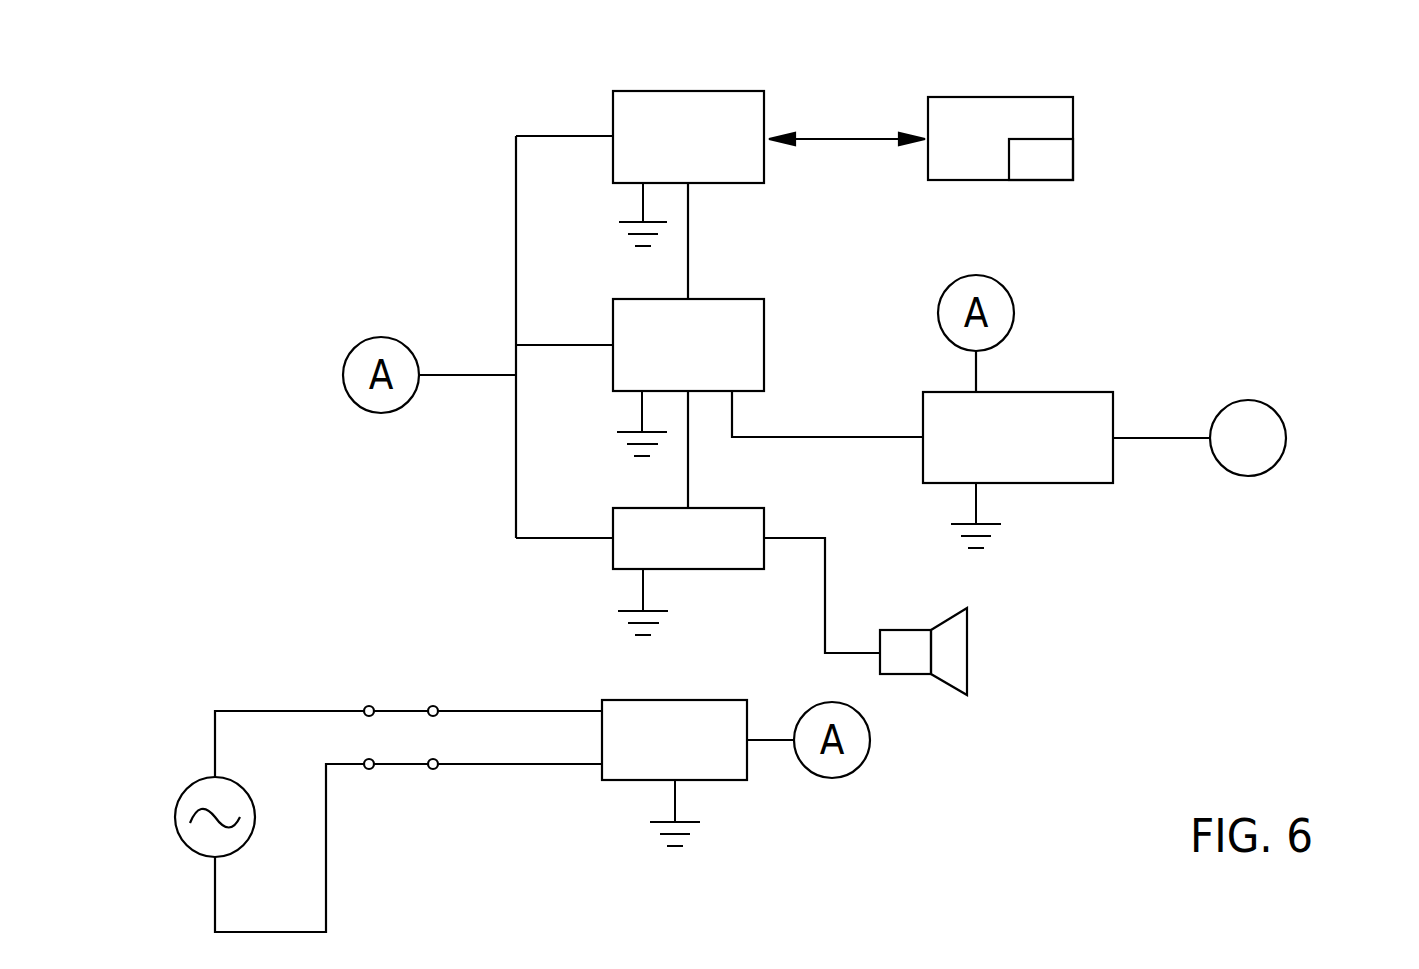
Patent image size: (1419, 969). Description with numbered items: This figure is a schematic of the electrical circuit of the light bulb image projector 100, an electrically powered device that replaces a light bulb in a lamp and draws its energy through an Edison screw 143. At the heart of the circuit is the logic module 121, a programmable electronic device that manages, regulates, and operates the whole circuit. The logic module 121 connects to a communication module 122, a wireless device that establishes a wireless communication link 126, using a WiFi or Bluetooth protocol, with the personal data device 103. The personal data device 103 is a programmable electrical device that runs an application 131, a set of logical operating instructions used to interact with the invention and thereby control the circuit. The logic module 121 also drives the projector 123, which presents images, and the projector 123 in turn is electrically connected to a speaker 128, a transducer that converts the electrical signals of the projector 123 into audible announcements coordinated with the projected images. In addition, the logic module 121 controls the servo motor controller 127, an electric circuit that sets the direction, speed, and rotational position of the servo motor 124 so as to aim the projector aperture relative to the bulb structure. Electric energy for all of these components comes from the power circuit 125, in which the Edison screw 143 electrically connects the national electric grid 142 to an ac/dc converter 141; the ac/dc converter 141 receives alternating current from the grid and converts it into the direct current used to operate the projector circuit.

The light bulb image projector 100 is at (345, 125).
The personal data device 103 is at (1093, 113).
The logic module 121 is at (752, 320).
The communication module 122 is at (740, 99).
The projector 123 is at (625, 557).
The servo motor 124 is at (1280, 425).
The power circuit 125 is at (450, 818).
The wireless communication link 126 is at (843, 136).
The servo motor controller 127 is at (1110, 390).
The speaker 128 is at (955, 645).
The application 131 is at (1073, 160).
The ac/dc converter 141 is at (747, 770).
The national electric grid 142 is at (238, 781).
The Edison screw 143 is at (400, 708).